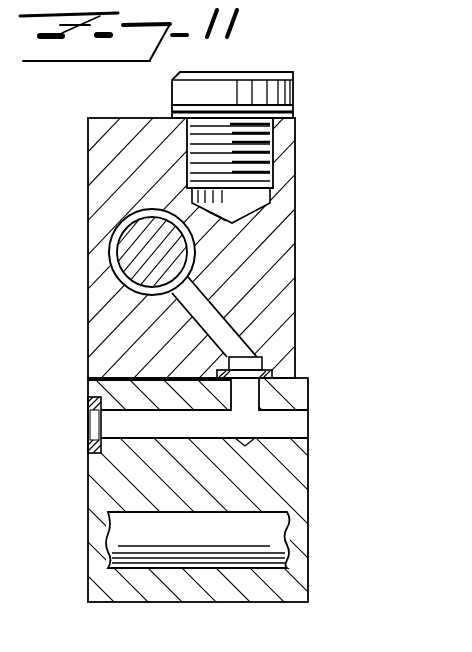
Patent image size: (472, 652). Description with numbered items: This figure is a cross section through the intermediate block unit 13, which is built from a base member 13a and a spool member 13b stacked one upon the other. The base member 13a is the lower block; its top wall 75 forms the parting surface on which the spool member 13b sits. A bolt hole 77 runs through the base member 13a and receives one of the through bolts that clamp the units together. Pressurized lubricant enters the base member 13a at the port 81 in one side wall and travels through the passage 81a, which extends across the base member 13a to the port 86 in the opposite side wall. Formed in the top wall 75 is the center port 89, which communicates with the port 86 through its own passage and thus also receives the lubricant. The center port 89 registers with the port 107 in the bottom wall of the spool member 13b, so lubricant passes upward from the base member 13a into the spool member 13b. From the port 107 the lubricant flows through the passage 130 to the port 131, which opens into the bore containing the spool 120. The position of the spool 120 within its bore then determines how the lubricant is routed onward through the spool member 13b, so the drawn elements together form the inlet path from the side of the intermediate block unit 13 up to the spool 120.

The intermediate block unit 13 is at (236, 326).
The base member 13a is at (88, 482).
The spool member 13b is at (80, 262).
The top wall 75 is at (170, 380).
The bolt hole 77 is at (225, 540).
The port 81 is at (95, 425).
The passage 81a is at (178, 433).
The port 86 is at (297, 433).
The center port 89 is at (253, 390).
The port 107 is at (238, 352).
The spool 120 is at (120, 224).
The passage 130 is at (213, 328).
The port 131 is at (194, 286).